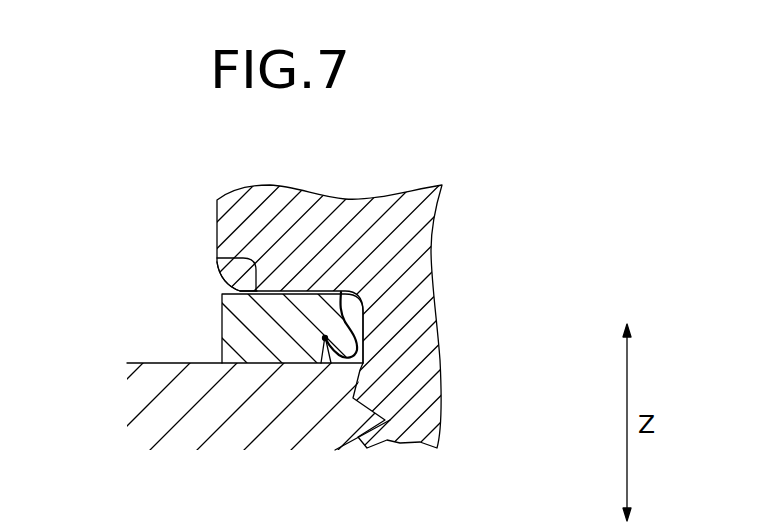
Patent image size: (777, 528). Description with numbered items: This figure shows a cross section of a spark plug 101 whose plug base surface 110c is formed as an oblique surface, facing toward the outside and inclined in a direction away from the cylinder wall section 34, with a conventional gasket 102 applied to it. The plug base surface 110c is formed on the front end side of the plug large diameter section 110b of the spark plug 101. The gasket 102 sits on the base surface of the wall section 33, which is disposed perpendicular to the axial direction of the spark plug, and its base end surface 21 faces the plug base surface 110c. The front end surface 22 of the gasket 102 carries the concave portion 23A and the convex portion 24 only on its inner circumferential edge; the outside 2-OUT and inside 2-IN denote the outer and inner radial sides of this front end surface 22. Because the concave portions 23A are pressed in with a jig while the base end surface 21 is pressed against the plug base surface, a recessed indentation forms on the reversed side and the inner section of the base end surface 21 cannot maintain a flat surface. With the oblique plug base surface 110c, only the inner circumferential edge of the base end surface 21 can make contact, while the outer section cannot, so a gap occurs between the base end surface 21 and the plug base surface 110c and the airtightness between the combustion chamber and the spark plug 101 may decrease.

The spark plug 101 is at (423, 260).
The plug large diameter section 110b is at (282, 212).
The plug base surface 110c is at (217, 261).
The inside of the gasket 2-IN is at (340, 290).
The outside of the gasket 2-OUT is at (222, 295).
The base end surface 21 is at (223, 294).
The conventional gasket 102 is at (222, 330).
The wall section 33 is at (165, 363).
The cylinder wall section 34 is at (137, 397).
The convex portion 24 is at (362, 352).
The front end surface 22 is at (262, 364).
The concave portion 23A is at (330, 364).